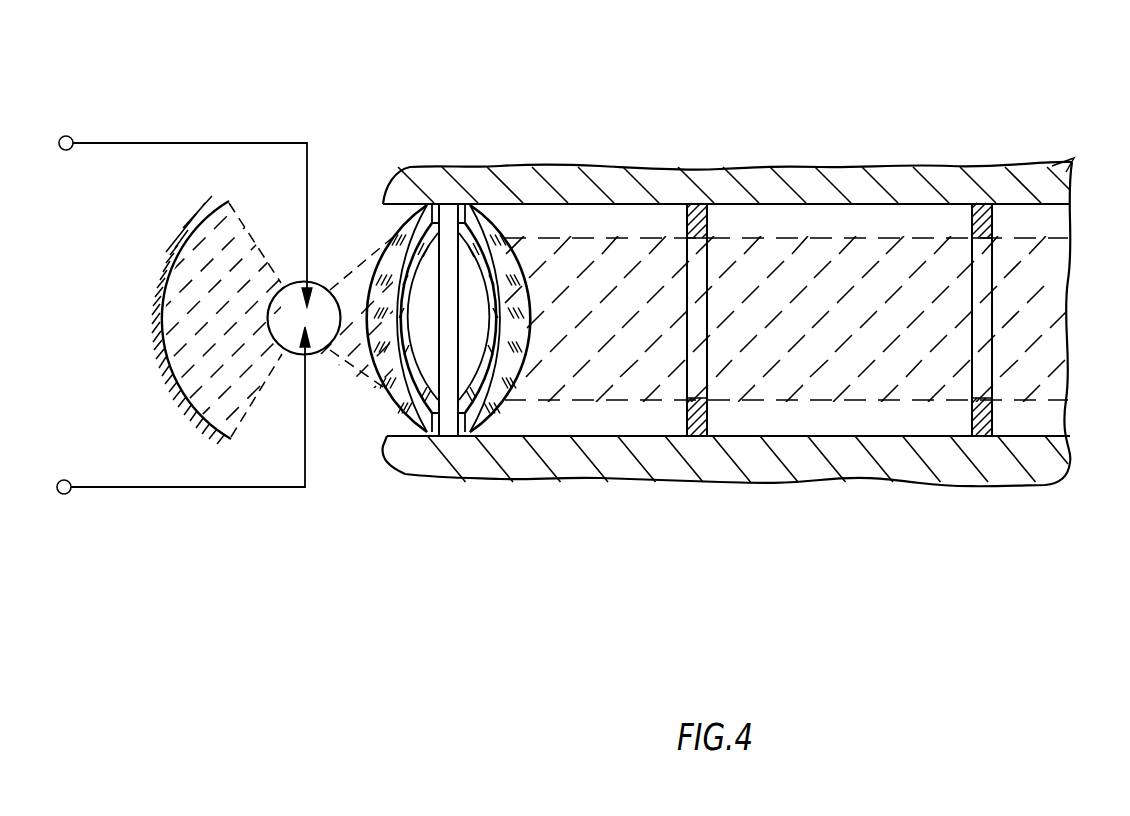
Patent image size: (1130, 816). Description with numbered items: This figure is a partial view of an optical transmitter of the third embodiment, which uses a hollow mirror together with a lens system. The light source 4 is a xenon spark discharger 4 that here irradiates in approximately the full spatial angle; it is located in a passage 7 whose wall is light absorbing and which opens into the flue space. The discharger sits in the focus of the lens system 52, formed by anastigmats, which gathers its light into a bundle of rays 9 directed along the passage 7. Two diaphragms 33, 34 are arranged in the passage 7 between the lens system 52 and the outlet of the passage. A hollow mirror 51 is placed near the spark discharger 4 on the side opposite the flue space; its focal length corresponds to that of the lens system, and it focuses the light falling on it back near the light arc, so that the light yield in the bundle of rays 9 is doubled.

The xenon spark discharger 4 is at (317, 306).
The passage 7 is at (845, 190).
The bundle of rays 9 is at (854, 324).
The diaphragm 33 is at (694, 222).
The diaphragm 34 is at (985, 218).
The hollow mirror 51 is at (183, 403).
The lens assembly 52 is at (397, 415).